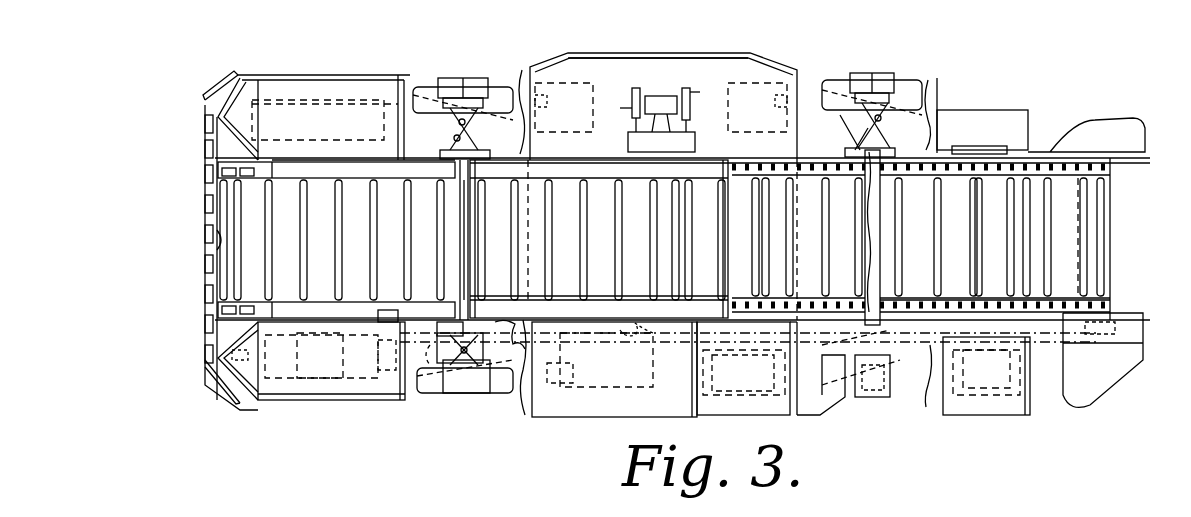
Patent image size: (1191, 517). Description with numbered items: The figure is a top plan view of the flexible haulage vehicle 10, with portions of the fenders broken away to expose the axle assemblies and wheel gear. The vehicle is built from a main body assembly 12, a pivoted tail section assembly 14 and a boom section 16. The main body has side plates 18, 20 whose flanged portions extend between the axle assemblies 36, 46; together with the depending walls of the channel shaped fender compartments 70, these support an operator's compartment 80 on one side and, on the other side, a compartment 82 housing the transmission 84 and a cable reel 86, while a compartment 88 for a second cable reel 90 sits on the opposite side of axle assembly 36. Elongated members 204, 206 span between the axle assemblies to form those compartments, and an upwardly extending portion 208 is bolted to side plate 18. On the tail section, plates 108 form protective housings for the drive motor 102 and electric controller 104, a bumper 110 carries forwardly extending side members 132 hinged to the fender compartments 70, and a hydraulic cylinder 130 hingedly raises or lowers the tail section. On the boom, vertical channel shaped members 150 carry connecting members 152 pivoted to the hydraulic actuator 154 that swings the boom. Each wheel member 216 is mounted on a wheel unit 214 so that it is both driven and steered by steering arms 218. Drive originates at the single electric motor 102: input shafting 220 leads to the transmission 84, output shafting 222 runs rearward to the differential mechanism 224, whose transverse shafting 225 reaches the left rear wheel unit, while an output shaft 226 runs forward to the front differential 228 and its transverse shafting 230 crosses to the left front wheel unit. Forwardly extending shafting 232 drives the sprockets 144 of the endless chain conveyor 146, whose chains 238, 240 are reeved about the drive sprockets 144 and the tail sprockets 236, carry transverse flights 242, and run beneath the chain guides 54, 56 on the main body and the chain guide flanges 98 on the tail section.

The flexible haulage vehicle 10 is at (832, 61).
The main body assembly 12 is at (599, 239).
The tail section assembly 14 is at (343, 240).
The boom section 16 is at (995, 239).
The side plate 18 is at (640, 137).
The side plate 20 is at (642, 324).
The axle assembly 36 is at (958, 106).
The axle assembly 46 is at (540, 160).
The chain guide 54 is at (676, 176).
The chain guide 56 is at (632, 300).
The fender compartment 70 is at (521, 70).
The operator's compartment 80 is at (705, 57).
The compartment 82 is at (575, 420).
The transmission 84 is at (613, 378).
The cable reel 86 is at (755, 398).
The compartment 88 is at (1018, 415).
The second cable reel 90 is at (985, 400).
The chain guide flange 98 is at (341, 174).
The drive motor 102 is at (322, 380).
The electric controller 104 is at (352, 100).
The plate 108 is at (258, 93).
The bumper 110 is at (210, 354).
The hydraulic cylinder 130 is at (386, 314).
The side member 132 is at (333, 74).
The drive sprocket 144 is at (1110, 166).
The endless chain conveyor 146 is at (1092, 245).
The vertical channel shaped member 150 is at (1013, 152).
The connecting member 152 is at (1000, 146).
The hydraulic actuator 154 is at (975, 150).
The elongated member 204 is at (732, 64).
The elongated member 206 is at (797, 415).
The upwardly extending portion 208 is at (685, 140).
The wheel unit 214 is at (472, 112).
The wheel member 216 is at (478, 85).
The steering arm 218 is at (858, 115).
The input shafting 220 is at (437, 343).
The shaft 222 is at (567, 325).
The differential mechanism 224 is at (504, 324).
The transverse shafting 225 is at (467, 244).
The output shaft 226 is at (743, 374).
The front differential 228 is at (851, 307).
The transverse shafting 230 is at (880, 225).
The forwardly extending shafting 232 is at (744, 372).
The sprocket 236 is at (222, 264).
The endless chain 238 is at (1030, 174).
The endless chain 240 is at (990, 302).
The flight 242 is at (800, 277).